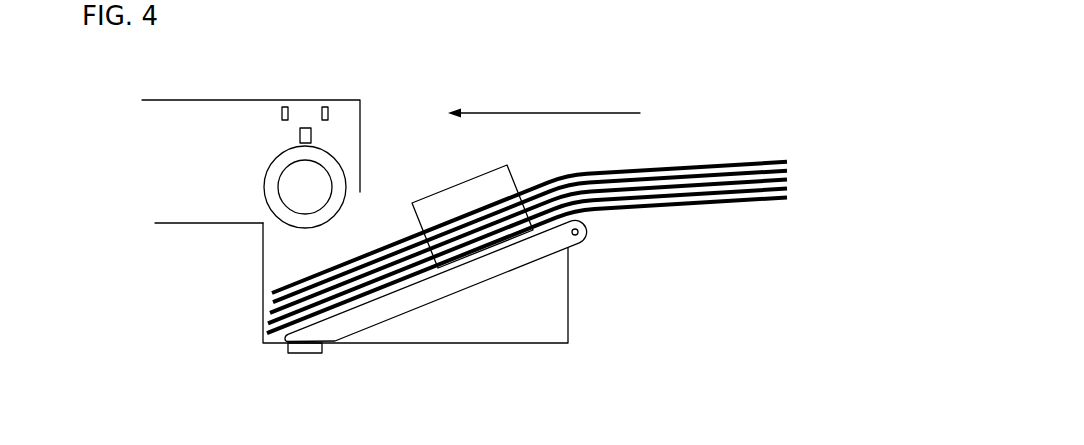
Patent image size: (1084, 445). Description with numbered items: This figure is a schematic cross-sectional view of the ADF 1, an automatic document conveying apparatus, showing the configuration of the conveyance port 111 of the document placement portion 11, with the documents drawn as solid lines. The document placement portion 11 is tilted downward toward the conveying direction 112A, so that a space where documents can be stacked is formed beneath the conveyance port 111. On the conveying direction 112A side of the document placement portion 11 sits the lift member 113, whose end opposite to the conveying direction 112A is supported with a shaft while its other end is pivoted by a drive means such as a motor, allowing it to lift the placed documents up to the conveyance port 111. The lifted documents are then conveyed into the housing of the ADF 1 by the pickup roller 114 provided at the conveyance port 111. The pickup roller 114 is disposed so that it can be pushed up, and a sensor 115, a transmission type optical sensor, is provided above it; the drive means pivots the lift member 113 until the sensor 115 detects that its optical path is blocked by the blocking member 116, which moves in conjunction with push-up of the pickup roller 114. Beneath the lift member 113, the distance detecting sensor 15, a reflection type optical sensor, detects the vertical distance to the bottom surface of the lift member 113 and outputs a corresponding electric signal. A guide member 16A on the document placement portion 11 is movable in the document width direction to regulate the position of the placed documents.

The ADF 1 is at (744, 88).
The document placement portion 11 is at (691, 212).
The conveyance port 111 is at (388, 200).
The conveying direction 112A is at (546, 110).
The lift member 113 is at (500, 273).
The pickup roller 114 is at (265, 185).
The sensor 115 is at (283, 113).
The blocking member 116 is at (307, 128).
The distance detecting sensor 15 is at (288, 346).
The guide member 16A is at (509, 166).